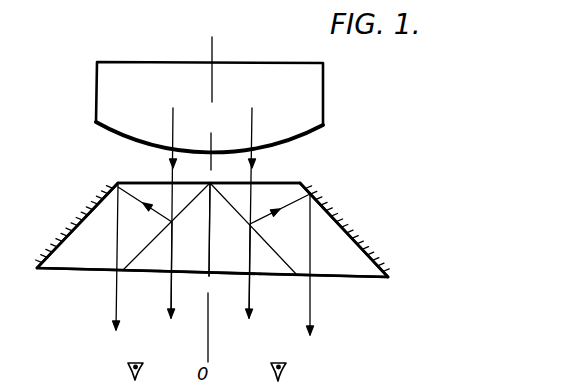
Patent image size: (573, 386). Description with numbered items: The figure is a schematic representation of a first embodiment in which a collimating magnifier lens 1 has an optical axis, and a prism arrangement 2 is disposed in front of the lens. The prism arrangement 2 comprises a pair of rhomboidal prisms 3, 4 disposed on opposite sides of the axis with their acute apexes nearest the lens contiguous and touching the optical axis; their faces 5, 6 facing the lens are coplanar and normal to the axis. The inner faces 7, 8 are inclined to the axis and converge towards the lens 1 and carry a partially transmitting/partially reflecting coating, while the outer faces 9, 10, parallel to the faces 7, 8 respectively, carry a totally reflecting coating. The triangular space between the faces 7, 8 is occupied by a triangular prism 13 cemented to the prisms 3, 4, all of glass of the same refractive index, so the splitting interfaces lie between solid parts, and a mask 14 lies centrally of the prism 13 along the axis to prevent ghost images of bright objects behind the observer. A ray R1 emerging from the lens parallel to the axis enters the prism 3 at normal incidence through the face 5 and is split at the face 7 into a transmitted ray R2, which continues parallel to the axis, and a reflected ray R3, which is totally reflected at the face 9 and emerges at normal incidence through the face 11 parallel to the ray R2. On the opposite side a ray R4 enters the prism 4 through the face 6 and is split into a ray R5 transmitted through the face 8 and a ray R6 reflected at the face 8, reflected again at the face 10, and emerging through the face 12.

The collimating magnifier lens 1 is at (318, 93).
The prism arrangement 2 is at (343, 197).
The rhomboidal prism 3 is at (98, 212).
The rhomboidal prism 4 is at (352, 256).
The face 5 is at (147, 182).
The face 6 is at (285, 182).
The inner face 7 is at (182, 215).
The inner face 8 is at (220, 207).
The outer face 9 is at (76, 226).
The outer face 10 is at (345, 223).
The face 11 is at (62, 272).
The face 12 is at (348, 278).
The triangular prism 13 is at (189, 269).
The mask 14 is at (210, 253).
The ray of light R1 is at (186, 213).
The transmitted ray R2 is at (159, 280).
The reflected ray R3 is at (126, 261).
The ray R4 is at (265, 213).
The ray R5 is at (249, 286).
The ray R6 is at (294, 268).